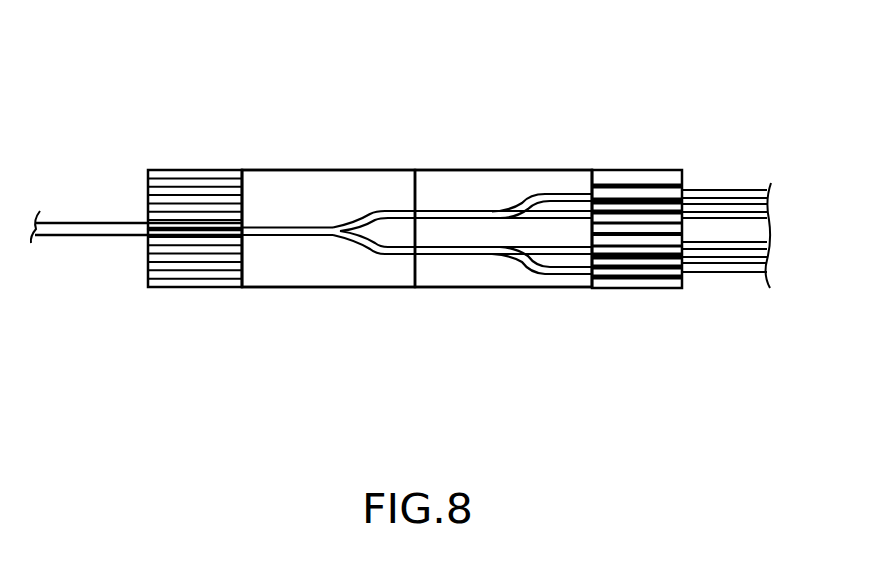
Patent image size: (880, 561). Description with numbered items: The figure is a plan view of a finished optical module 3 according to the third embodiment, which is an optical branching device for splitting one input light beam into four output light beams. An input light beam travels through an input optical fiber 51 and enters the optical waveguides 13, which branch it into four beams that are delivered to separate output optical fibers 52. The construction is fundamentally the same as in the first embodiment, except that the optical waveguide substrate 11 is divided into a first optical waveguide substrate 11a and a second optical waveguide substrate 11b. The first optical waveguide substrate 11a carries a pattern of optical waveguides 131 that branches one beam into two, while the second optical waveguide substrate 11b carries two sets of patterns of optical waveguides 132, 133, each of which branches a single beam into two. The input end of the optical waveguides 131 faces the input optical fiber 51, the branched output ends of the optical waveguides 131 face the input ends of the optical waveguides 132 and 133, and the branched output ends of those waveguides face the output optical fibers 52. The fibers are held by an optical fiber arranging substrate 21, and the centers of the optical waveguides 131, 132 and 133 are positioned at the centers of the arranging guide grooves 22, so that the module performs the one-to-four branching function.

The optical module 3 is at (412, 217).
The optical waveguide substrate 11 is at (412, 217).
The first optical waveguide substrate 11a is at (331, 268).
The second optical waveguide substrate 11b is at (465, 270).
The optical waveguides 13 is at (412, 217).
The optical waveguides 131 is at (284, 242).
The optical waveguides 132 is at (493, 256).
The optical waveguides 133 is at (497, 208).
The optical fiber arranging substrate 21 is at (172, 170).
The arranging guide grooves 22 is at (186, 268).
The input optical fiber 51 is at (108, 237).
The output optical fibers 52 is at (679, 193).